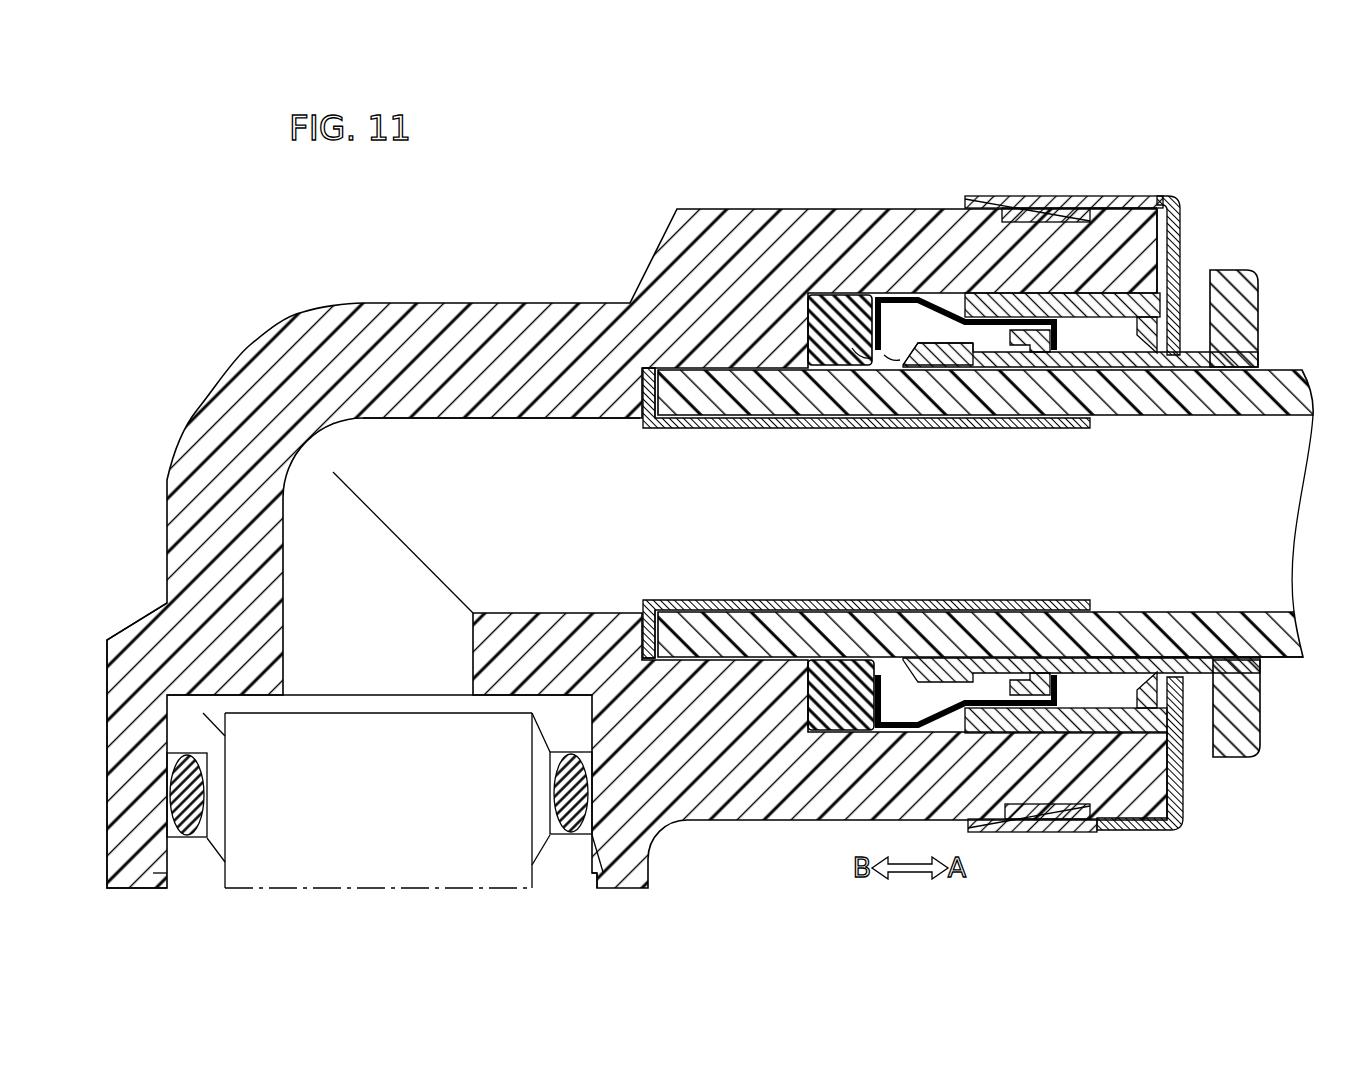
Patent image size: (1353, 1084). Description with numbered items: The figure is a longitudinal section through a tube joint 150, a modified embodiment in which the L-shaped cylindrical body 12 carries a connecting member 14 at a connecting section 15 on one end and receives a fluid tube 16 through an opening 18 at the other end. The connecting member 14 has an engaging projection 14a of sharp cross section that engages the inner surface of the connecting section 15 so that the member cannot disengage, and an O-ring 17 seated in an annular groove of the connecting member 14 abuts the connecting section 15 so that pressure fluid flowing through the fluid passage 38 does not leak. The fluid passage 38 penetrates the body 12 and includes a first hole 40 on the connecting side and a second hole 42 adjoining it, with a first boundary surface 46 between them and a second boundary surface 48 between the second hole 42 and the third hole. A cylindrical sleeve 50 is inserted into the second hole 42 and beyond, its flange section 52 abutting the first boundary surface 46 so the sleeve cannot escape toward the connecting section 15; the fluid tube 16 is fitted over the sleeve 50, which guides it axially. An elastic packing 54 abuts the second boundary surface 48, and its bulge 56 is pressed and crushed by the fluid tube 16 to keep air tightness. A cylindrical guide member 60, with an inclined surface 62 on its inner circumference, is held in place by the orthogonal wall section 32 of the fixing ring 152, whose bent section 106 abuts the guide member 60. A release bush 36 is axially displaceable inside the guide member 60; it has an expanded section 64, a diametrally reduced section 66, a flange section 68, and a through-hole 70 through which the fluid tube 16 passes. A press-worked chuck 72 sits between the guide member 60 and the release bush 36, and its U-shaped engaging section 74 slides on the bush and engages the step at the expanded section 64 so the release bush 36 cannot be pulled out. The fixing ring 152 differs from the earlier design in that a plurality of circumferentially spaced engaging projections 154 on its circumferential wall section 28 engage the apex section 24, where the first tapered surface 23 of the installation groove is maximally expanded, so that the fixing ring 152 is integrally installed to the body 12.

The body 12 is at (700, 209).
The tube joint 150 is at (461, 203).
The first hole 40 is at (441, 418).
The fluid passage 38 is at (325, 493).
The connecting section 15 is at (107, 690).
The connecting member 14 is at (363, 716).
The O-ring 17 is at (197, 797).
The engaging projection 14a is at (602, 880).
The fluid tube 16 is at (1289, 375).
The through-hole 70 is at (1250, 656).
The second hole 42 is at (732, 392).
The sleeve 50 is at (1043, 428).
The flange section 52 is at (640, 405).
The first boundary surface 46 is at (650, 603).
The bulge 56 is at (822, 294).
The second boundary surface 48 is at (822, 668).
The inclined surface 62 is at (942, 296).
The packing 54 is at (858, 365).
The chuck 72 is at (900, 355).
The diametrally reduced section 66 is at (950, 355).
The expanded section 64 is at (982, 365).
The release bush 36 is at (1121, 486).
The bent section 106 is at (1152, 362).
The orthogonal wall section 32 is at (1180, 268).
The engaging section 74 is at (1062, 345).
The guide member 60 is at (1250, 289).
The flange section 68 is at (1252, 705).
The fixing ring 152 is at (1183, 223).
The opening 18 is at (1175, 745).
The circumferential wall section 28 is at (985, 196).
The engaging projections 154 is at (1030, 210).
The apex section 24 is at (1102, 205).
The first tapered surface 23 is at (1138, 205).